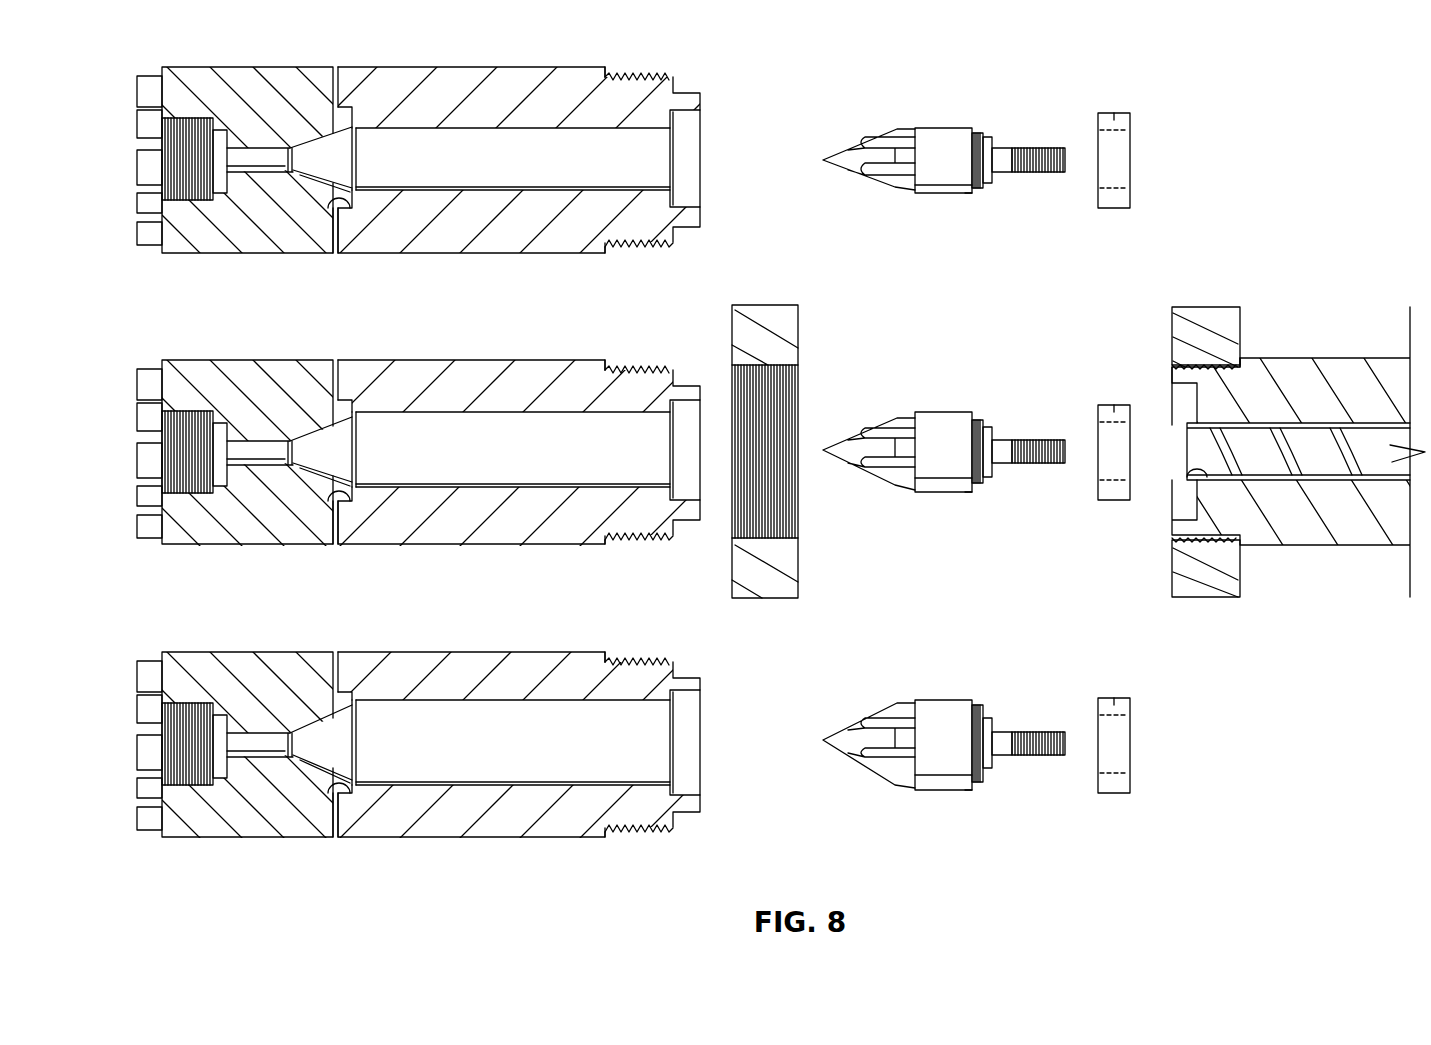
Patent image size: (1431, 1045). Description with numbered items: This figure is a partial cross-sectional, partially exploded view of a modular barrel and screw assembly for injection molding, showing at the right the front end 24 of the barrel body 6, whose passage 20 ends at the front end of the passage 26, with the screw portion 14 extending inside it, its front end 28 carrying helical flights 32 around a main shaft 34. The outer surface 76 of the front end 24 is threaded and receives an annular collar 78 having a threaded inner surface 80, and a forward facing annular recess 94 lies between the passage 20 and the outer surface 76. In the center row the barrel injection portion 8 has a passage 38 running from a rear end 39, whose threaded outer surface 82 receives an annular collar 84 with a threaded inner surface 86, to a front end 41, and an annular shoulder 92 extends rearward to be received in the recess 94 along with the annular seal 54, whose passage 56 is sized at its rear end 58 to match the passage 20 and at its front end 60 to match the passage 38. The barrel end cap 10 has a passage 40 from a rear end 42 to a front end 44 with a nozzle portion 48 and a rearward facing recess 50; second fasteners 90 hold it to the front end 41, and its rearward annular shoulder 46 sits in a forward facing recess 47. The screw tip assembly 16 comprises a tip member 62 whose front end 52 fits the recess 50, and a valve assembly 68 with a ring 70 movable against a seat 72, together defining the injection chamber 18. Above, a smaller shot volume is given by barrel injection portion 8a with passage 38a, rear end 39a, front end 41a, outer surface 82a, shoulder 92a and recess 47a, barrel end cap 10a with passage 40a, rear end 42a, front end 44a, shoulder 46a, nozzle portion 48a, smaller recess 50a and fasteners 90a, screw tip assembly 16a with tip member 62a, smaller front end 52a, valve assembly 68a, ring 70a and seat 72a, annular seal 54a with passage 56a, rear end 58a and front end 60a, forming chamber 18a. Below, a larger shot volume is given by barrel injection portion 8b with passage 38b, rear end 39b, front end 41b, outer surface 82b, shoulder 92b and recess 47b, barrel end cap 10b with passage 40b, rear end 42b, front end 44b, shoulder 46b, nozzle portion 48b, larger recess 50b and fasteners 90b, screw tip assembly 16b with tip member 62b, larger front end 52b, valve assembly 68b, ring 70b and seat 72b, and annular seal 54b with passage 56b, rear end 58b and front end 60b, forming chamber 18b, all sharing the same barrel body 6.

The barrel body 6 is at (1343, 375).
The barrel injection portion 8 is at (520, 446).
The barrel injection portion 8a is at (520, 153).
The barrel injection portion 8b is at (520, 738).
The barrel end cap 10 is at (243, 431).
The barrel end cap 10a is at (183, 80).
The barrel end cap 10b is at (243, 723).
The screw portion 14 is at (1298, 536).
The screw tip assembly 16 is at (944, 431).
The screw tip assembly 16a is at (940, 141).
The screw tip assembly 16b is at (940, 723).
The injection chamber 18 is at (513, 398).
The injection chamber 18a is at (471, 148).
The injection chamber 18b is at (513, 693).
The passage 20 is at (1293, 430).
The front end 24 is at (1185, 500).
The front end of the passage 26 is at (1210, 478).
The front end 28 is at (1185, 430).
The flights 32 is at (1345, 430).
The main shaft 34 is at (1310, 462).
The passage 38 is at (547, 367).
The passage 38a is at (537, 140).
The passage 38b is at (543, 658).
The rear end 39 is at (690, 413).
The rear end 39a is at (683, 115).
The rear end 39b is at (694, 707).
The passage 40 is at (300, 397).
The passage 40a is at (285, 153).
The passage 40b is at (300, 692).
The front end 41 is at (364, 360).
The front end 41a is at (343, 112).
The front end 41b is at (369, 651).
The rear end 42 is at (354, 542).
The rear end 42a is at (368, 208).
The rear end 42b is at (357, 839).
The front end 44 is at (130, 535).
The front end 44a is at (150, 230).
The front end 44b is at (126, 828).
The rearward annular shoulder 46 is at (401, 398).
The rearward annular shoulder 46a is at (362, 128).
The rearward annular shoulder 46b is at (405, 693).
The forward facing recess 47 is at (313, 544).
The forward facing recess 47a is at (335, 210).
The forward facing recess 47b is at (311, 838).
The nozzle portion 48 is at (246, 387).
The nozzle portion 48a is at (242, 150).
The nozzle portion 48b is at (244, 679).
The rearward facing recess 50 is at (321, 375).
The rearward facing recess 50a is at (312, 148).
The rearward facing recess 50b is at (322, 667).
The front end 52 is at (857, 447).
The front end 52a is at (857, 155).
The front end 52b is at (857, 740).
The annular seal 54 is at (1107, 413).
The annular seal 54a is at (1134, 122).
The annular seal 54b is at (1135, 707).
The passage 56 is at (1118, 425).
The passage 56a is at (1125, 135).
The passage 56b is at (1125, 720).
The rear end 58 is at (1123, 430).
The rear end 58a is at (1125, 113).
The rear end 58b is at (1125, 698).
The front end 60 is at (1098, 412).
The front end 60a is at (1100, 120).
The front end 60b is at (1100, 705).
The tip member 62 is at (1004, 448).
The tip member 62a is at (1004, 156).
The tip member 62b is at (1004, 741).
The valve assembly 68 is at (980, 498).
The valve assembly 68a is at (980, 199).
The valve assembly 68b is at (980, 796).
The ring 70 is at (941, 432).
The ring 70a is at (941, 142).
The ring 70b is at (941, 727).
The seat 72 is at (982, 420).
The seat 72a is at (982, 133).
The seat 72b is at (982, 705).
The outer surface 76 is at (1205, 368).
The annular collar 78 is at (1222, 322).
The threaded inner surface 80 is at (1243, 383).
The outer surface 82 is at (631, 339).
The outer surface 82a is at (620, 77).
The outer surface 82b is at (636, 632).
The annular collar 84 is at (787, 421).
The threaded inner surface 86 is at (790, 385).
The second fasteners 90 is at (131, 399).
The second fasteners 90a is at (146, 90).
The second fasteners 90b is at (129, 691).
The annular shoulder 92 is at (654, 546).
The annular shoulder 92a is at (687, 217).
The annular shoulder 92b is at (659, 838).
The forward facing annular recess 94 is at (1180, 548).